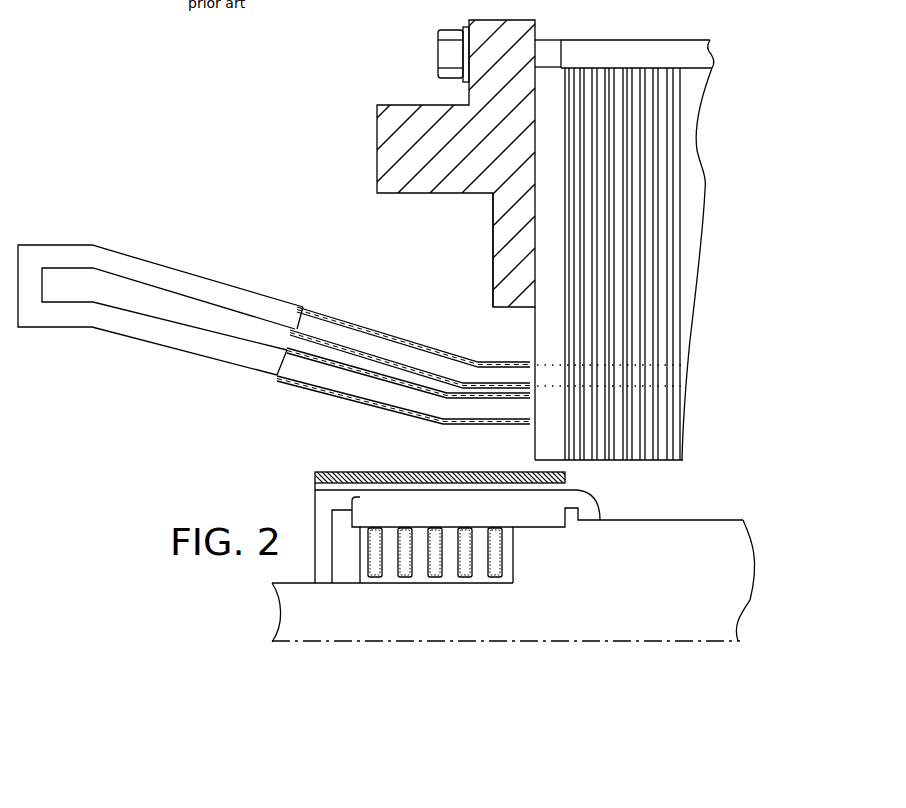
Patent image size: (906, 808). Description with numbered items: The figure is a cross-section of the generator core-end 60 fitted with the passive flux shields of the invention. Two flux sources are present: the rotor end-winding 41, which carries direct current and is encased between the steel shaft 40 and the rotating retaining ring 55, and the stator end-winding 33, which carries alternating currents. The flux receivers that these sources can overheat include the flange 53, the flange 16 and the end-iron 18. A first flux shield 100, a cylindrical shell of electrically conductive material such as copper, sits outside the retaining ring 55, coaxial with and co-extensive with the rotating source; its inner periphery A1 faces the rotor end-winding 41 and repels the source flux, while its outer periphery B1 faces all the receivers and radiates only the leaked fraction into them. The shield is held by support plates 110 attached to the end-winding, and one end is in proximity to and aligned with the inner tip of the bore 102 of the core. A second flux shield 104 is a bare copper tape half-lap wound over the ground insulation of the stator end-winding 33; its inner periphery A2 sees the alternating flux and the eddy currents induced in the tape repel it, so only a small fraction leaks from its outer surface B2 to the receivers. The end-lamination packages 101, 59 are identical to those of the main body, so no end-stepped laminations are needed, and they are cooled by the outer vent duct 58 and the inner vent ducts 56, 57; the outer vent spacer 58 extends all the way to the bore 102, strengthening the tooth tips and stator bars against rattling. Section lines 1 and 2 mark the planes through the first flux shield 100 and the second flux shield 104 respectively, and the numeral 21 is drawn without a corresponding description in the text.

The flange 16 is at (493, 260).
The end-iron 18 is at (562, 350).
The heat exchanger 21 is at (712, 43).
The stator end-winding 33 is at (115, 250).
The steel shaft 40 is at (377, 585).
The rotor end-winding 41 is at (440, 552).
The flange 53 is at (377, 150).
The retaining ring 55 is at (314, 497).
The inner vent duct 56 is at (637, 39).
The inner vent duct 57 is at (642, 37).
The outer vent duct spacer 58 is at (532, 41).
The end-lamination package 59 is at (698, 290).
The core-end 60 is at (716, 179).
The first flux shield 100 is at (316, 473).
The end-lamination package 101 is at (706, 448).
The bore of the core 102 is at (607, 483).
The second flux shield 104 is at (403, 341).
The support plate 110 is at (443, 453).
The section line 1- 1 is at (478, 450).
The section line 2- 2 is at (380, 301).
The inner periphery of first flux shield A1 is at (380, 499).
The inner periphery of second flux shield A2 is at (265, 262).
The outer periphery of first flux shield B1 is at (328, 446).
The outer surface of second flux shield B2 is at (267, 288).